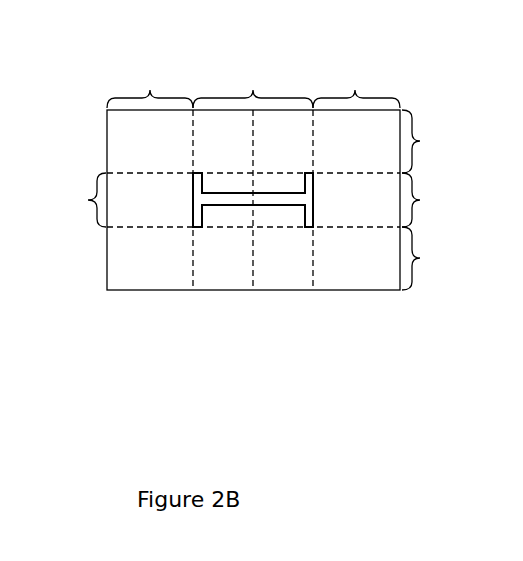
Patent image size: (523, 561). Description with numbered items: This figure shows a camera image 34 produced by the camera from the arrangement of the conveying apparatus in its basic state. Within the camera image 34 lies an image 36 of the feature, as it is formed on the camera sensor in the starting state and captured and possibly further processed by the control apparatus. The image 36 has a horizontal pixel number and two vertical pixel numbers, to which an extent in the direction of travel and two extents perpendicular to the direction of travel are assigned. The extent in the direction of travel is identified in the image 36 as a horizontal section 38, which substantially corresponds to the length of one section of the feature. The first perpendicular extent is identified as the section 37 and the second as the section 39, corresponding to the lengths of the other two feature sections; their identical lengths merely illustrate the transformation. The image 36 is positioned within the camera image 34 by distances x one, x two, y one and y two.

The camera image 34 is at (107, 125).
The image 36 is at (220, 166).
The section 37 is at (197, 228).
The horizontal section 38 is at (243, 207).
The section 39 is at (307, 228).